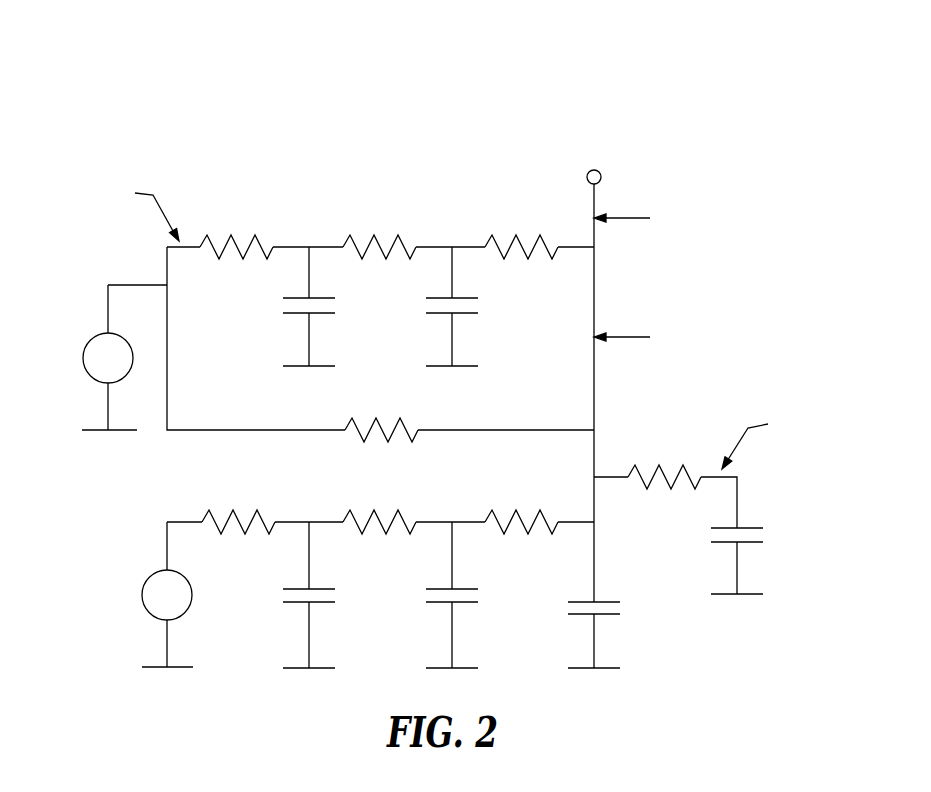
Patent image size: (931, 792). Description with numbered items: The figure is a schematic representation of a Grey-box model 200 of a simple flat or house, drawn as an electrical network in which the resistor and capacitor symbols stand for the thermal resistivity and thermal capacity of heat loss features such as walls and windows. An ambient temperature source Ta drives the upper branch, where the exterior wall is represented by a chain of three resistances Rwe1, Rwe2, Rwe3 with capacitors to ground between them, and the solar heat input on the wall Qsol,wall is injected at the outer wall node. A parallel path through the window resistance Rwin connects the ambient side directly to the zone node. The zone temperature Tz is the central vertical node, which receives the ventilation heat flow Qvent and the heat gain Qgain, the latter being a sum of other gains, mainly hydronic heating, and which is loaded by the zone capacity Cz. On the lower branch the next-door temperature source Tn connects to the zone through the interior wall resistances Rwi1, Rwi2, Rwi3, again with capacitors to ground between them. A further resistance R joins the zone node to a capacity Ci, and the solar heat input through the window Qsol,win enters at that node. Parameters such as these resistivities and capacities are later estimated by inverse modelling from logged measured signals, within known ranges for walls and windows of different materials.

The Grey-box model 200 is at (447, 385).
The exterior wall thermal resistance Rwe1 is at (236, 230).
The exterior wall thermal resistance Rwe2 is at (379, 230).
The exterior wall thermal resistance Rwe3 is at (521, 230).
The window thermal resistance Rwin is at (381, 413).
The interior wall thermal resistance Rwi1 is at (238, 504).
The interior wall thermal resistance Rwi2 is at (379, 504).
The interior wall thermal resistance Rwi3 is at (521, 504).
The thermal resistance R is at (664, 459).
The ambient temperature Ta is at (108, 358).
The next-door temperature Tn is at (167, 595).
The zone temperature Tz is at (593, 159).
The zone thermal capacity Cz is at (598, 635).
The thermal capacity Ci is at (738, 561).
The ventilation heat flow Qvent is at (658, 216).
The heat gain Qgain is at (653, 332).
The solar heat input on wall Qsol,wall is at (103, 206).
The solar heat input through window Qsol,win is at (794, 436).